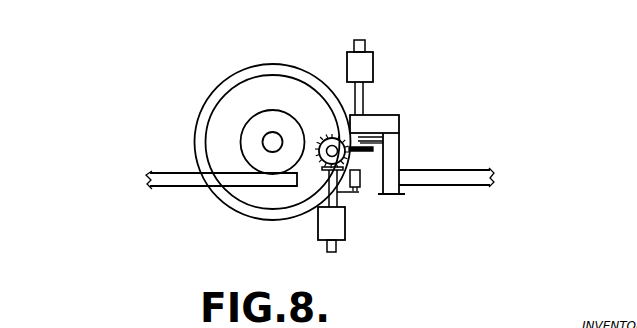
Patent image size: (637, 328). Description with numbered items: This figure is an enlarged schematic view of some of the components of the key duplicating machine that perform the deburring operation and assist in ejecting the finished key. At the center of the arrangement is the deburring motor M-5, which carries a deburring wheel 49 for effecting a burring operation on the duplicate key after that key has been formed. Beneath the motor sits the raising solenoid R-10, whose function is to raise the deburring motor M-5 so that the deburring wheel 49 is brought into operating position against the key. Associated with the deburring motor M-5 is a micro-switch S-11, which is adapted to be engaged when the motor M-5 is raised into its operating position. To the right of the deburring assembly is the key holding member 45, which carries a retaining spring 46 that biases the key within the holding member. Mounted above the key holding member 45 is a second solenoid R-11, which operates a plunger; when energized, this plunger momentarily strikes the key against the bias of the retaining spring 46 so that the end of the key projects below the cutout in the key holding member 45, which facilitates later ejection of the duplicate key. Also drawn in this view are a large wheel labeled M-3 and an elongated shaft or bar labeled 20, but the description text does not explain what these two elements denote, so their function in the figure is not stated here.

The drive wheel M-3 is at (253, 123).
The deburring motor M-5 is at (327, 134).
The solenoid R-11 is at (347, 58).
The key holding member 45 is at (381, 134).
The retaining spring 46 is at (373, 149).
The deburring wheel 49 is at (349, 153).
The shaft 20 is at (466, 185).
The micro-switch S-11 is at (360, 186).
The raising solenoid R-10 is at (335, 228).